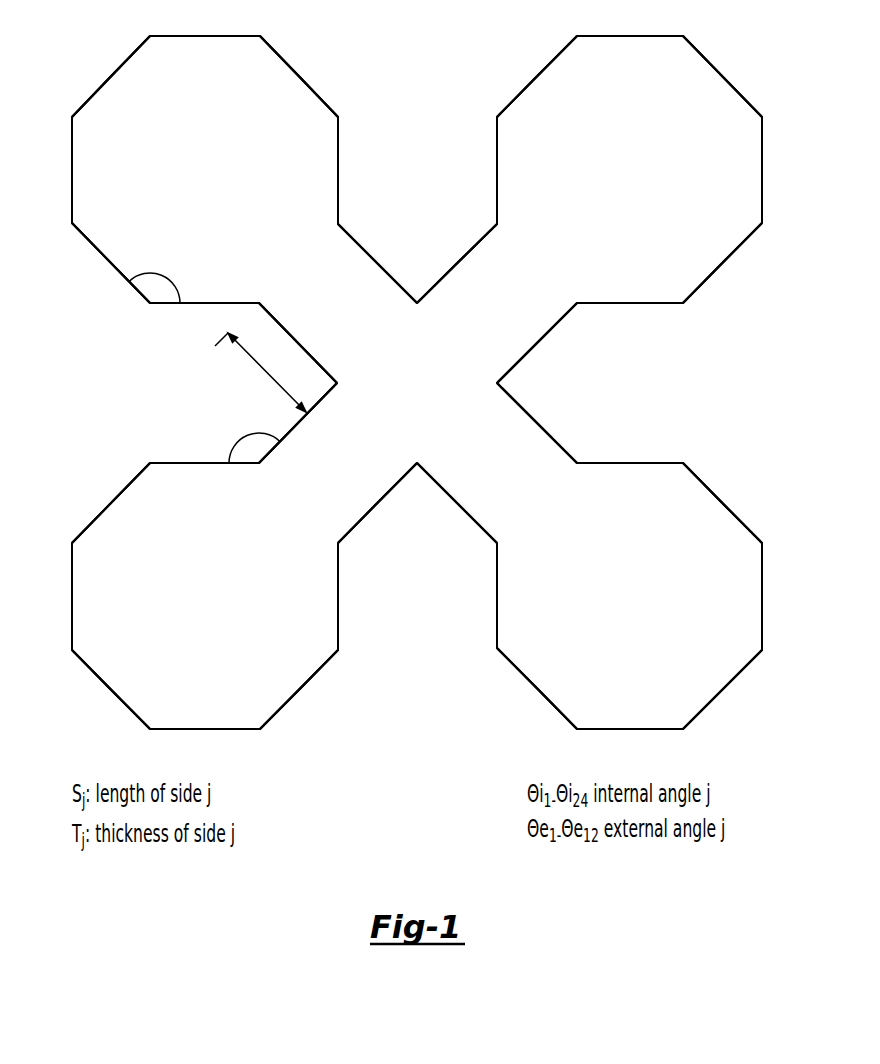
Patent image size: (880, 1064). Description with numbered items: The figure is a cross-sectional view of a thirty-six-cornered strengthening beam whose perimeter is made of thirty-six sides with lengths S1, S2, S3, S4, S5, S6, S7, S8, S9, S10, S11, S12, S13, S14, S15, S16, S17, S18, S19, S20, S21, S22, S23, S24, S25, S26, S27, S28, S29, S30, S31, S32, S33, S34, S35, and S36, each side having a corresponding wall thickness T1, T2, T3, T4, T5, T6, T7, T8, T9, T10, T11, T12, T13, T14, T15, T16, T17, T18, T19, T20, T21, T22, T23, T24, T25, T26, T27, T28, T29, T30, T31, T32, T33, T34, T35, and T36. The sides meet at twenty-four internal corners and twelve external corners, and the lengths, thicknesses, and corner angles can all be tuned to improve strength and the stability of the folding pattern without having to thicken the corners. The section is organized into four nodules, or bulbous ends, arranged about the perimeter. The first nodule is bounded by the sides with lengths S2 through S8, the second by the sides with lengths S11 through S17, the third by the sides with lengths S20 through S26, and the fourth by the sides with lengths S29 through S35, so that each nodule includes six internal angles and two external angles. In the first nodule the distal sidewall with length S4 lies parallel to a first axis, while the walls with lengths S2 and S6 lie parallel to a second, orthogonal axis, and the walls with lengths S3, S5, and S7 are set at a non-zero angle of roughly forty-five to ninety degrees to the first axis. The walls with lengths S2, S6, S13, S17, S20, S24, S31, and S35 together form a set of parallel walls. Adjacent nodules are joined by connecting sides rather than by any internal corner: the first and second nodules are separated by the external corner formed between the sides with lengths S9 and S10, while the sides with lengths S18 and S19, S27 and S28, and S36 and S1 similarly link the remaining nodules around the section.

The length of side 1 S1 is at (230, 349).
The length of side 2 S2 is at (204, 319).
The length of side 3 S3 is at (111, 263).
The length of side 4 S4 is at (60, 170).
The length of side 5 S5 is at (111, 76).
The length of side 6 S6 is at (205, 21).
The length of side 7 S7 is at (299, 76).
The length of side 8 S8 is at (350, 170).
The length of side 9 S9 is at (377, 263).
The length of side 10 S10 is at (457, 263).
The length of side 11 S11 is at (481, 170).
The length of side 12 S12 is at (535, 76).
The length of side 13 S13 is at (630, 21).
The length of side 14 S14 is at (722, 76).
The length of side 15 S15 is at (777, 170).
The length of side 16 S16 is at (722, 263).
The length of side 17 S17 is at (630, 319).
The length of side 18 S18 is at (537, 343).
The length of side 19 S19 is at (537, 423).
The length of side 20 S20 is at (630, 448).
The length of side 21 S21 is at (722, 503).
The length of side 22 S22 is at (777, 596).
The length of side 23 S23 is at (722, 689).
The length of side 24 S24 is at (630, 741).
The length of side 25 S25 is at (537, 688).
The length of side 26 S26 is at (480, 595).
The length of side 27 S27 is at (457, 503).
The length of side 28 S28 is at (377, 503).
The length of side 29 S29 is at (354, 596).
The length of side 30 S30 is at (299, 689).
The length of side 31 S31 is at (205, 741).
The length of side 32 S32 is at (111, 689).
The length of side 33 S33 is at (57, 596).
The length of side 34 S34 is at (111, 503).
The length of side 35 S35 is at (204, 448).
The length of side 36 S36 is at (298, 423).
The thickness of side 1 T1 is at (361, 343).
The thickness of side 2 T2 is at (204, 285).
The thickness of side 3 T3 is at (111, 263).
The thickness of side 4 T4 is at (83, 170).
The thickness of side 5 T5 is at (111, 76).
The thickness of side 6 T6 is at (205, 52).
The thickness of side 7 T7 is at (299, 76).
The thickness of side 8 T8 is at (325, 170).
The thickness of side 9 T9 is at (377, 263).
The thickness of side 10 T10 is at (457, 263).
The thickness of side 11 T11 is at (513, 170).
The thickness of side 12 T12 is at (537, 76).
The thickness of side 13 T13 is at (630, 52).
The thickness of side 14 T14 is at (722, 76).
The thickness of side 15 T15 is at (745, 170).
The thickness of side 16 T16 is at (721, 263).
The thickness of side 17 T17 is at (630, 285).
The thickness of side 18 T18 is at (537, 343).
The thickness of side 19 T19 is at (537, 423).
The thickness of side 20 T20 is at (630, 480).
The thickness of side 21 T21 is at (722, 503).
The thickness of side 22 T22 is at (744, 596).
The thickness of side 23 T23 is at (720, 689).
The thickness of side 24 T24 is at (630, 713).
The thickness of side 25 T25 is at (537, 688).
The thickness of side 26 T26 is at (512, 595).
The thickness of side 27 T27 is at (457, 503).
The thickness of side 28 T28 is at (377, 503).
The thickness of side 29 T29 is at (322, 596).
The thickness of side 30 T30 is at (298, 689).
The thickness of side 31 T31 is at (205, 713).
The thickness of side 32 T32 is at (111, 689).
The thickness of side 33 T33 is at (88, 596).
The thickness of side 34 T34 is at (111, 503).
The thickness of side 35 T35 is at (204, 480).
The thickness of side 36 T36 is at (298, 423).